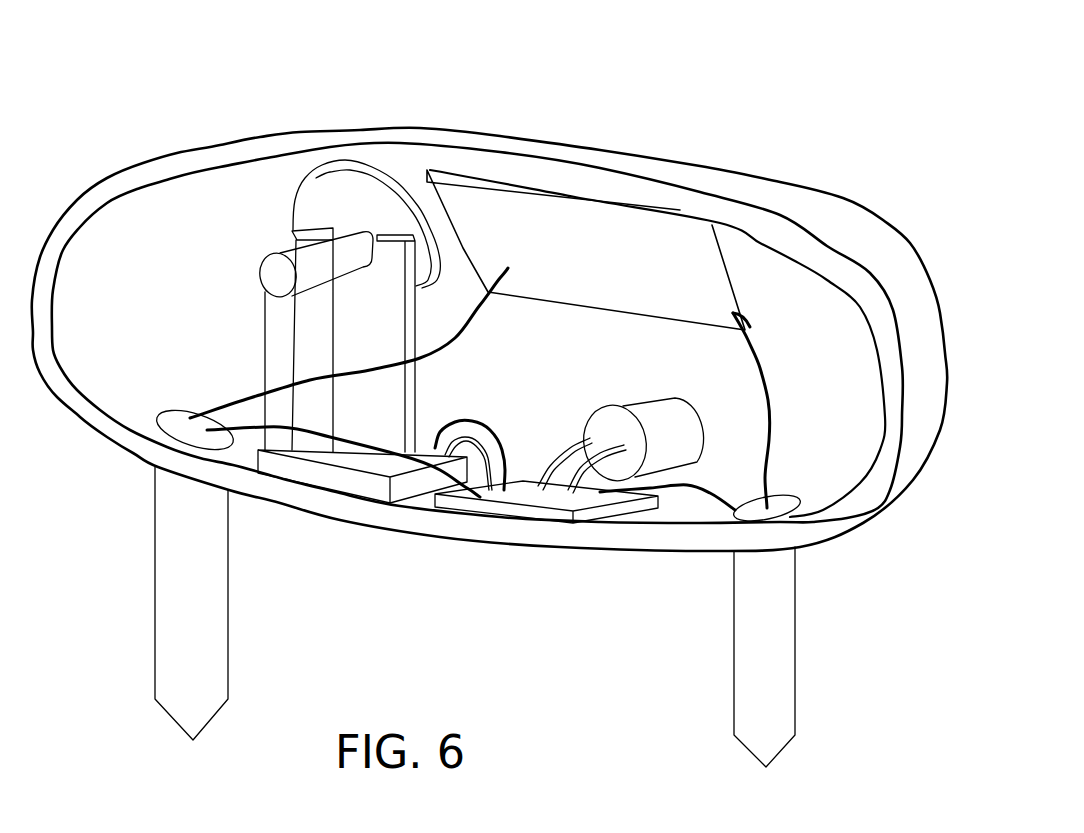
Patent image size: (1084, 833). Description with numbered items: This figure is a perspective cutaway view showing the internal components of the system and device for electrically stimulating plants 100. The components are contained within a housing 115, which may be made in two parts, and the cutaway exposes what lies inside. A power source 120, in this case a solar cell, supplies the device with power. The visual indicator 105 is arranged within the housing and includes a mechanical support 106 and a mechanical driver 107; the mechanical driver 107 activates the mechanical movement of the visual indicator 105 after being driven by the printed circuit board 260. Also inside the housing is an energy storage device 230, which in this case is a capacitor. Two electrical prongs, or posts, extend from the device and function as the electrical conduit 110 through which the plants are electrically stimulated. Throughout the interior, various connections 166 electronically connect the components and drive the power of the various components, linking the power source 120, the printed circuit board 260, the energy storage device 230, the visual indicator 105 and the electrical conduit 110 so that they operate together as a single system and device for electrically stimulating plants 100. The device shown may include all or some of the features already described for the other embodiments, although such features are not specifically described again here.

The system and device for electrically stimulating plants 100 is at (195, 74).
The visual indicator 105 is at (352, 183).
The mechanical support 106 is at (395, 268).
The mechanical driver 107 is at (343, 460).
The electrical conduit 110 is at (172, 550).
The housing 115 is at (848, 248).
The power source 120 is at (578, 218).
The connections 166 is at (767, 383).
The energy storage device 230 is at (667, 430).
The printed circuit board 260 is at (545, 498).